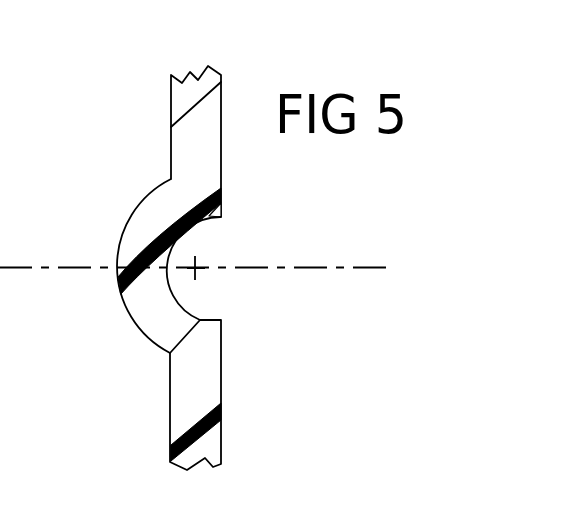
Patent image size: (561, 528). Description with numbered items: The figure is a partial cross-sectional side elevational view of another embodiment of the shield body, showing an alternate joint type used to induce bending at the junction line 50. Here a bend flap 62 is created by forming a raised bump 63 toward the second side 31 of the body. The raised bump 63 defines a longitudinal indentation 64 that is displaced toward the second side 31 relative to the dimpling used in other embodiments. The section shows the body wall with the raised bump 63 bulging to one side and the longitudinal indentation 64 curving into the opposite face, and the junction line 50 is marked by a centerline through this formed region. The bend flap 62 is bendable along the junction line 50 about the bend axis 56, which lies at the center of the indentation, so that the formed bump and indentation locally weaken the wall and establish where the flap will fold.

The second side 31 is at (146, 415).
The junction line 50 is at (336, 266).
The bend axis 56 is at (168, 274).
The bend flap 62 is at (207, 380).
The raised bump 63 is at (143, 237).
The longitudinal indentation 64 is at (210, 238).